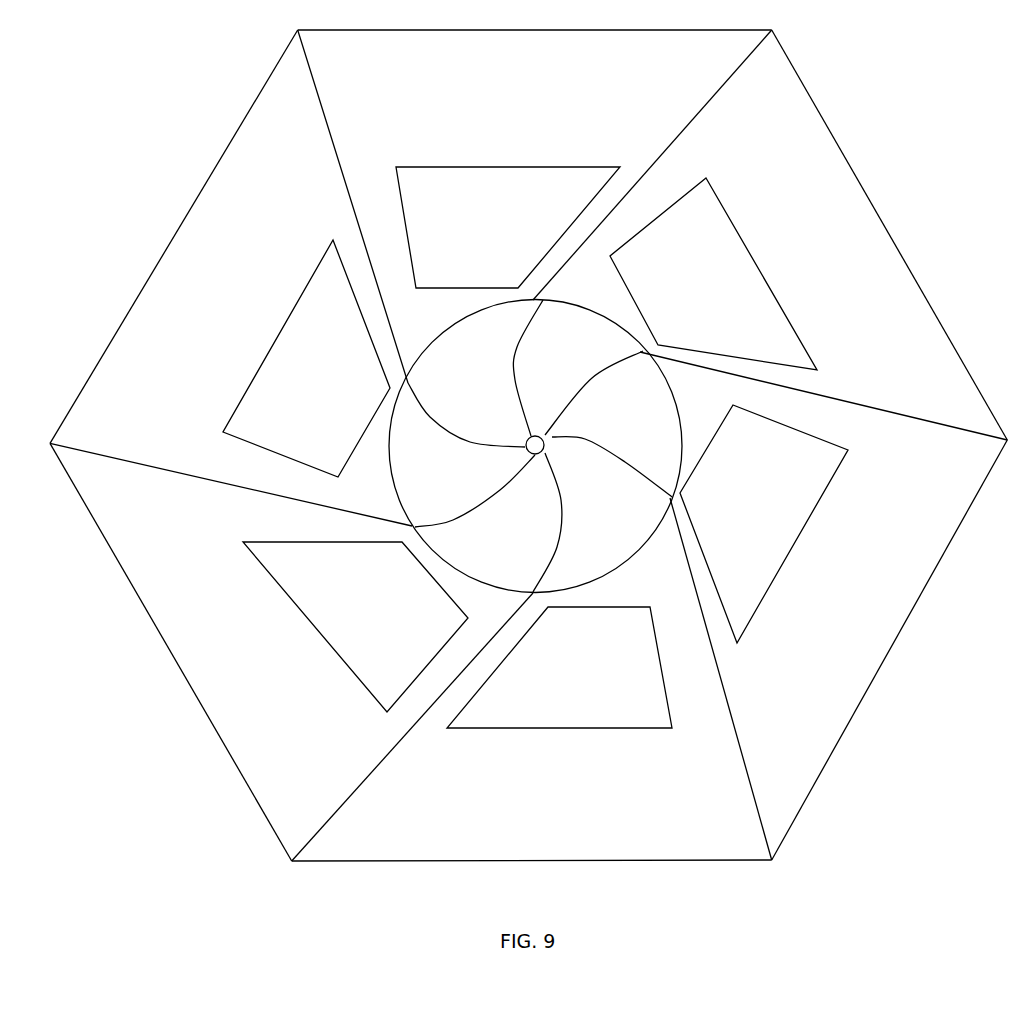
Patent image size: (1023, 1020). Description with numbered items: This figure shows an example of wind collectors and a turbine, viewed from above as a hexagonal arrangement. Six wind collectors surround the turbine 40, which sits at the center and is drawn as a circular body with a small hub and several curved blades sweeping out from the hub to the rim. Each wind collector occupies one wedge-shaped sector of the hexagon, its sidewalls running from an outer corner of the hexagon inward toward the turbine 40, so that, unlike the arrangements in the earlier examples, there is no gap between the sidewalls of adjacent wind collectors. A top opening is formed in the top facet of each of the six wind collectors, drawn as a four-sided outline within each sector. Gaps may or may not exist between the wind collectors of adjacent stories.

The turbine 40 is at (496, 418).